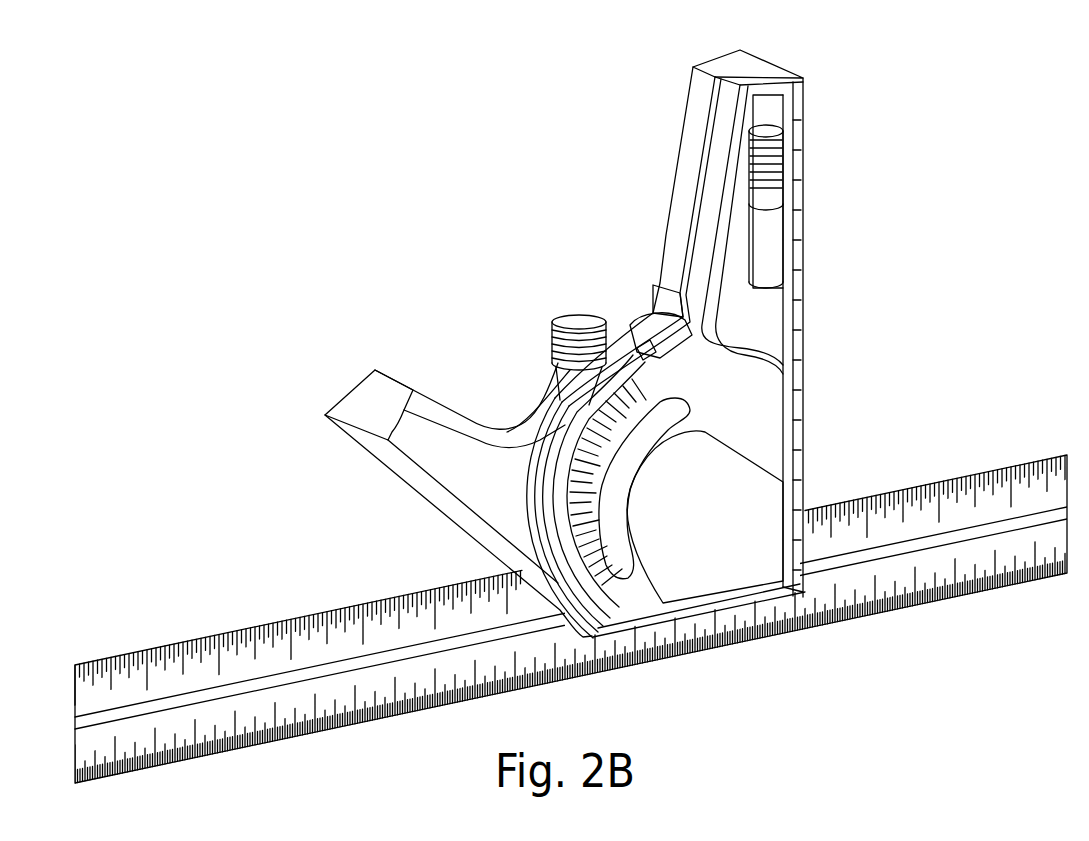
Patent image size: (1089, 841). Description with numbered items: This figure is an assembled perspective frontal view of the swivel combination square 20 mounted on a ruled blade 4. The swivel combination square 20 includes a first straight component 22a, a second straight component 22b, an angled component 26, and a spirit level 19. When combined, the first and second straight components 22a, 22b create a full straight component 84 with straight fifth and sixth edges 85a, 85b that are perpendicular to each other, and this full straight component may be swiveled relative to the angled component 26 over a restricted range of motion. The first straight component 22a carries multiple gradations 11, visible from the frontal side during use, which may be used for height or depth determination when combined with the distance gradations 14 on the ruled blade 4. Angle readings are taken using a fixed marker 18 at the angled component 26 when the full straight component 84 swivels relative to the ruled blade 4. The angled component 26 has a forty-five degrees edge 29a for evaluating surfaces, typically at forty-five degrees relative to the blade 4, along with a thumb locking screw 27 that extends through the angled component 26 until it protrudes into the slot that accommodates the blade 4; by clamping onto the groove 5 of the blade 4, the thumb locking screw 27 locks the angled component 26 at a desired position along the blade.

The ruled blade 4 is at (930, 596).
The groove 5 is at (86, 724).
The gradations 11 is at (804, 440).
The distance gradations 14 is at (212, 642).
The fixed marker 18 is at (643, 350).
The spirit level 19 is at (770, 188).
The swivel combination square 20 is at (362, 236).
The first straight component 22a is at (765, 313).
The second straight component 22b is at (692, 131).
The angled component 26 is at (375, 400).
The thumb locking screw 27 is at (578, 317).
The 45 degrees edge 29a is at (440, 504).
The full straight component 84 is at (621, 213).
The fifth edge 85a is at (808, 243).
The sixth edge 85b is at (770, 603).